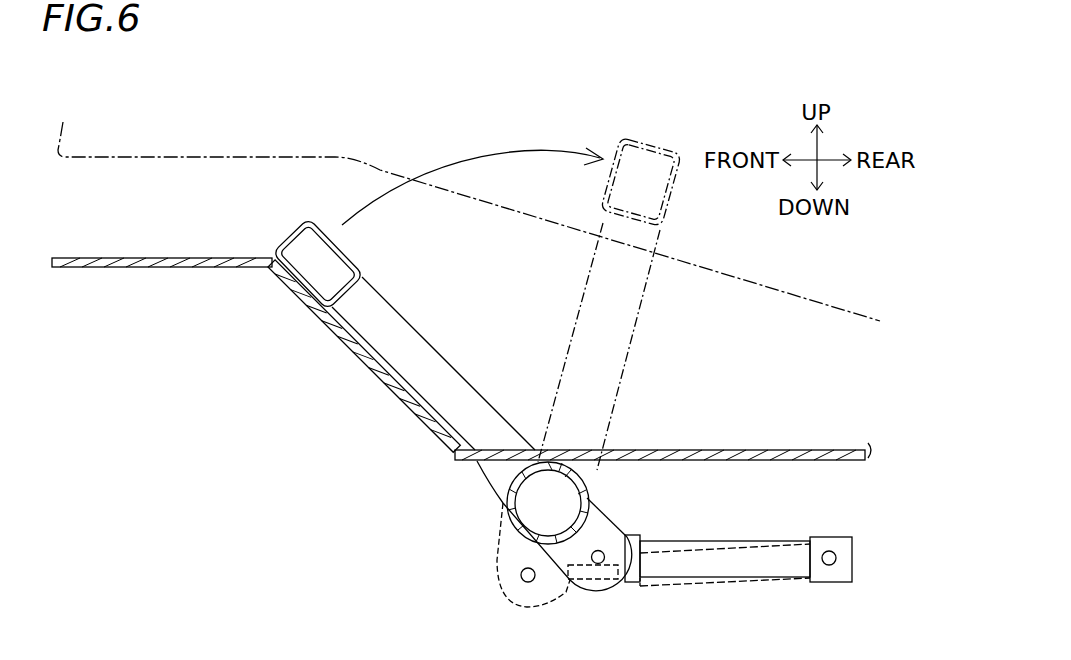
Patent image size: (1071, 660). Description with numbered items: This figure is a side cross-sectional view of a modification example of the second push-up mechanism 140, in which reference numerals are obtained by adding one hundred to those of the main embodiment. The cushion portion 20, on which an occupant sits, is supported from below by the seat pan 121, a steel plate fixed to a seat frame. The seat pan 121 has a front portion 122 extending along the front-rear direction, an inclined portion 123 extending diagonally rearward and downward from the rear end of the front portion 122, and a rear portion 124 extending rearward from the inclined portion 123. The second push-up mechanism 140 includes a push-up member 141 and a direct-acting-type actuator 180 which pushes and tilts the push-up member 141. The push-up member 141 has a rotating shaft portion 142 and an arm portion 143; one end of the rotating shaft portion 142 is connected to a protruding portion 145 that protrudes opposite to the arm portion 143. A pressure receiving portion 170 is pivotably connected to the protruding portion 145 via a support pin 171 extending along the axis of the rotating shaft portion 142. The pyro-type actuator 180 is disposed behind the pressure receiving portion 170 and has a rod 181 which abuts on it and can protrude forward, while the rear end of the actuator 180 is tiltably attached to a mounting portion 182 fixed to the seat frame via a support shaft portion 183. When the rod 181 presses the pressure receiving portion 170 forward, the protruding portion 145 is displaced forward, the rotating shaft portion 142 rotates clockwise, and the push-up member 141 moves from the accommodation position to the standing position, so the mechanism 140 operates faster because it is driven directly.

The cushion portion 20 is at (62, 117).
The seat pan 121 is at (256, 324).
The front portion 122 is at (129, 268).
The inclined portion 123 is at (340, 356).
The rear portion 124 is at (790, 449).
The second push-up mechanism 140 is at (643, 388).
The push-up member 141 is at (488, 484).
The rotating shaft portion 142 is at (590, 490).
The arm portion 143 is at (406, 310).
The protruding portion 145 is at (604, 582).
The pressure receiving portion 170 is at (632, 524).
The support pin 171 is at (606, 564).
The direct-acting-type actuator 180 is at (716, 580).
The rod 181 is at (580, 591).
The mounting portion 182 is at (831, 583).
The support shaft portion 183 is at (830, 551).